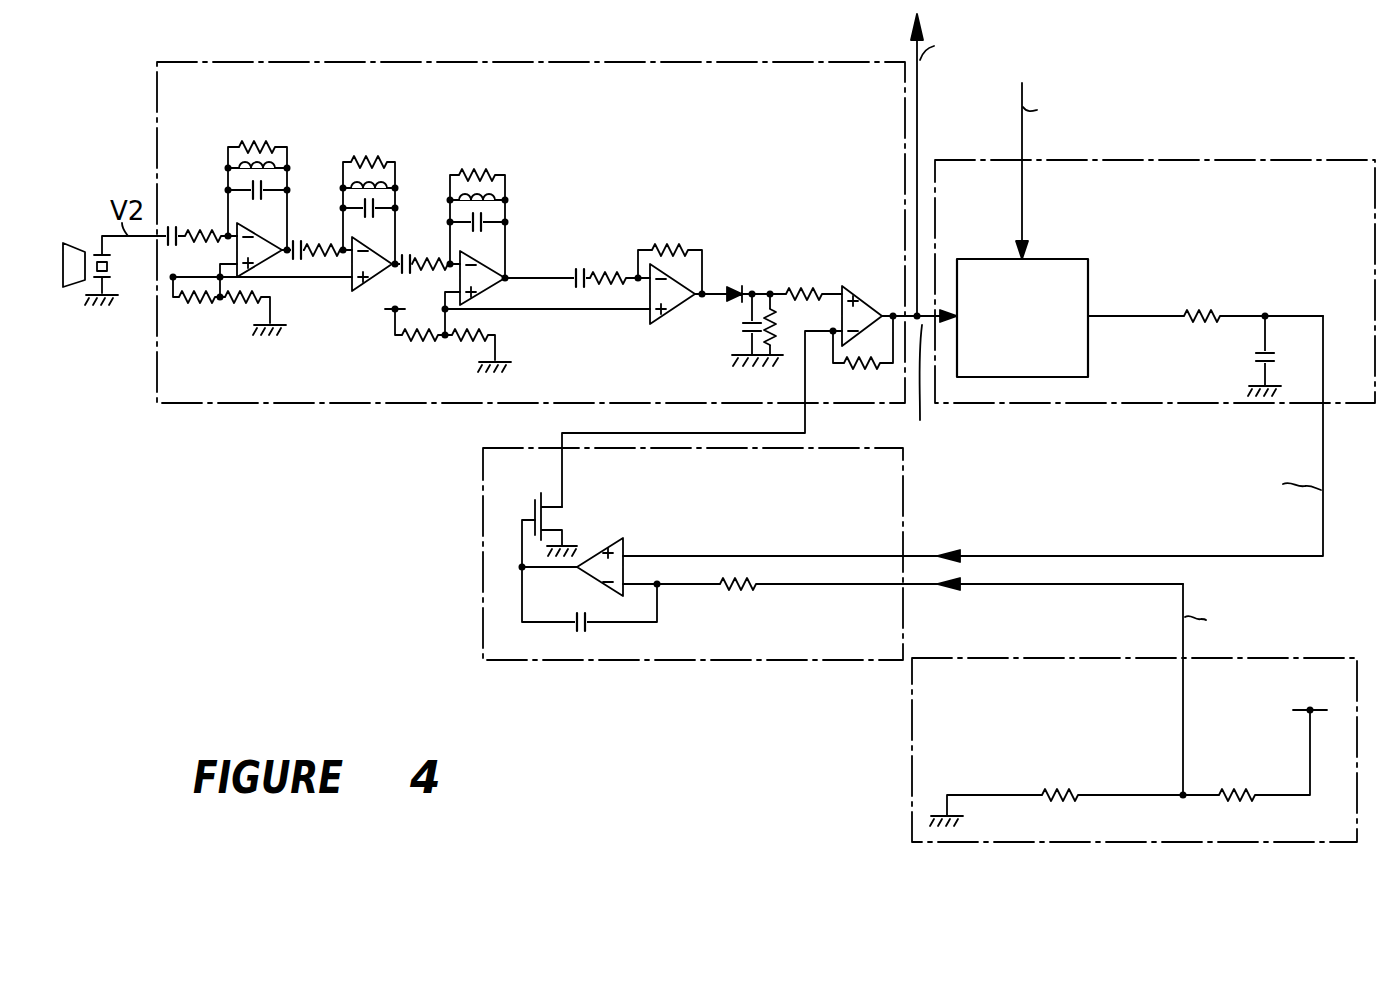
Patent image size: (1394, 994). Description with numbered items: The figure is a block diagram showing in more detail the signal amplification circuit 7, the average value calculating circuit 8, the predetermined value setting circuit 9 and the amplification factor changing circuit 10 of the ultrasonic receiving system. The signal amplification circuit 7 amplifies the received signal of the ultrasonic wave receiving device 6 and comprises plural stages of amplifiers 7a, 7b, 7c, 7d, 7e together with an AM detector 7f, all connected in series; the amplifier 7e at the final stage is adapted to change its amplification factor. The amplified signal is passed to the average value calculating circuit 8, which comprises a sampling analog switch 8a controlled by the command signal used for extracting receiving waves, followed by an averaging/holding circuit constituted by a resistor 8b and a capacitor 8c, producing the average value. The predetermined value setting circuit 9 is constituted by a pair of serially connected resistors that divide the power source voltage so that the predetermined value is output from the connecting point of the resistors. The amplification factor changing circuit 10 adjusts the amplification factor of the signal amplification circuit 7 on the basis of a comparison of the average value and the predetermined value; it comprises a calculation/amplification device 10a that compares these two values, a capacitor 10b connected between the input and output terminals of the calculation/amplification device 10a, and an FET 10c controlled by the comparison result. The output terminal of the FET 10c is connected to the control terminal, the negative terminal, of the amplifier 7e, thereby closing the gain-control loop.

The ultrasonic wave receiving device 6 is at (94, 244).
The signal amplification circuit 7 is at (825, 62).
The amplifier 7a is at (262, 268).
The amplifier 7b is at (375, 285).
The amplifier 7c is at (483, 270).
The amplifier 7d is at (668, 314).
The amplifier 7e is at (843, 287).
The AM detector 7f is at (752, 290).
The average value calculating circuit 8 is at (1173, 160).
The sampling analog switch 8a is at (1020, 377).
The resistor 8b is at (1205, 310).
The capacitor 8c is at (1250, 362).
The predetermined value setting circuit 9 is at (1100, 658).
The amplification factor changing circuit 10 is at (483, 545).
The calculation/amplification device 10a is at (612, 540).
The capacitor 10b is at (582, 632).
The FET 10c is at (535, 498).